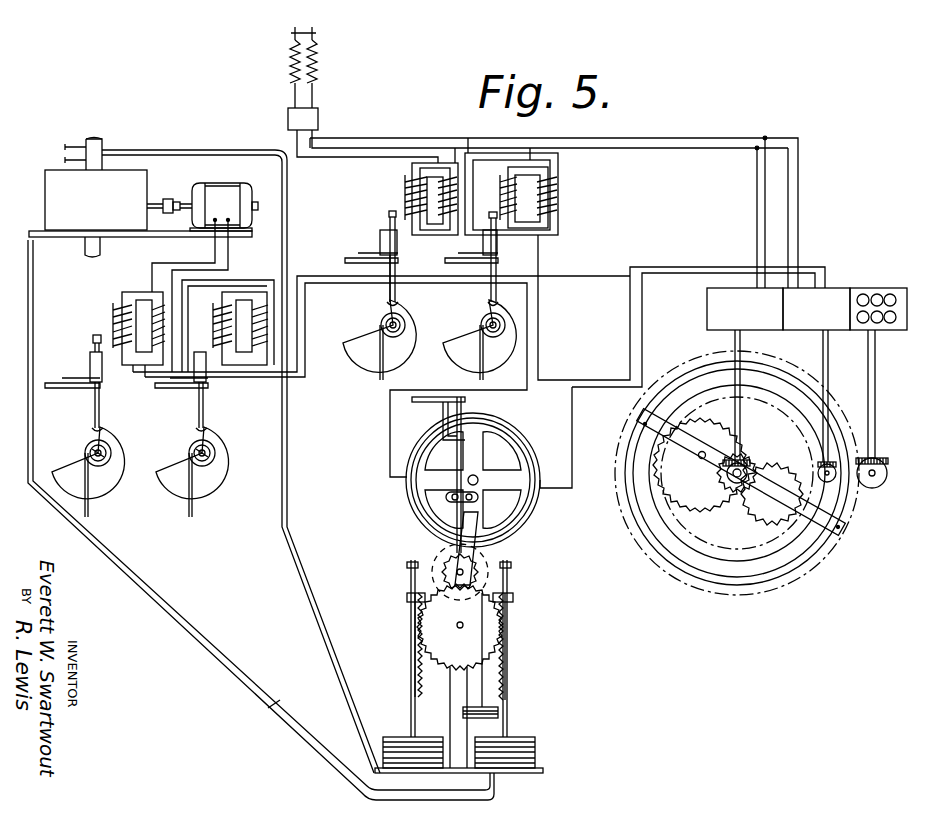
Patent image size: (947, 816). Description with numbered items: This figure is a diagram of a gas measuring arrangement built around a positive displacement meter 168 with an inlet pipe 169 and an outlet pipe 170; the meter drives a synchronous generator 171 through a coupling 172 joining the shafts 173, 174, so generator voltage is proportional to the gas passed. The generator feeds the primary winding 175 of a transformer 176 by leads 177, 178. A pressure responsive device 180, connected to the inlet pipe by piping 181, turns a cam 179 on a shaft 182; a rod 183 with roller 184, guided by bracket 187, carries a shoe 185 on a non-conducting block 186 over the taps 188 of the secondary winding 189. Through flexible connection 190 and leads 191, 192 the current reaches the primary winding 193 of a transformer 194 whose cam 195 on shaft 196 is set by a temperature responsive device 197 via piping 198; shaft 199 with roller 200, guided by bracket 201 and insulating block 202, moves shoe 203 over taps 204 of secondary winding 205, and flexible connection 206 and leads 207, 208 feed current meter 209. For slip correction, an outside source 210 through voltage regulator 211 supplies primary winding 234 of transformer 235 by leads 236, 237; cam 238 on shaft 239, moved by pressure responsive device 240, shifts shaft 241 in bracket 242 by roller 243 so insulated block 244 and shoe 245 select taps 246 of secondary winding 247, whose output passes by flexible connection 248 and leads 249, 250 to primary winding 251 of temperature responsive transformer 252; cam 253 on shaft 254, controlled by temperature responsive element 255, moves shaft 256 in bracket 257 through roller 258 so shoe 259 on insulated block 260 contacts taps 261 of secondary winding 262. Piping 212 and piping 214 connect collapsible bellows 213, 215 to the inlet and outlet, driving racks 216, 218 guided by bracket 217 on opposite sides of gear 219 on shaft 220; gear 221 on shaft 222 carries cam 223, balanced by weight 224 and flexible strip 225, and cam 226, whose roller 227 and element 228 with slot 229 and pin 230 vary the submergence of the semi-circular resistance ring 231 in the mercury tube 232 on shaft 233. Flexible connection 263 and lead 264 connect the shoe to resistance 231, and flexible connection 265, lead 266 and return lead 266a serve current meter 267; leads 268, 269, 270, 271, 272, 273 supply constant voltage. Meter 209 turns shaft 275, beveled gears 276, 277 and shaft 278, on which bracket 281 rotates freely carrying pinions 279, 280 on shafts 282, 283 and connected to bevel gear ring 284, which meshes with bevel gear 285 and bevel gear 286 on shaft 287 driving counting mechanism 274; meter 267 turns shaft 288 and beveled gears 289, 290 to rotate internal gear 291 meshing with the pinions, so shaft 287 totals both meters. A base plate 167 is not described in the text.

The base plate 167 is at (140, 234).
The positive displacement meter 168 is at (45, 190).
The inlet pipe 169 is at (97, 145).
The outlet pipe 170 is at (85, 252).
The synchronous generator 171 is at (240, 193).
The coupling 172 is at (170, 199).
The shaft 173 is at (155, 203).
The shaft 174 is at (220, 187).
The primary winding 175 is at (135, 310).
The transformer 176 is at (122, 292).
The lead 177 is at (215, 250).
The lead 178 is at (228, 253).
The cam 179 is at (72, 482).
The pressure responsive device 180 is at (106, 447).
The piping 181 is at (72, 145).
The shaft 182 is at (90, 451).
The rod 183 is at (92, 404).
The roller 184 is at (92, 428).
The shoe 185 is at (93, 338).
The non-conducting block 186 is at (95, 347).
The bracket 187 is at (90, 362).
The taps 188 is at (113, 326).
The secondary winding 189 is at (113, 311).
The flexible connection 190 is at (104, 362).
The lead 191 is at (133, 375).
The lead 192 is at (145, 380).
The primary winding 193 is at (65, 155).
The transformer 194 is at (238, 292).
The cam 195 is at (212, 492).
The shaft 196 is at (194, 451).
The temperature responsive device 197 is at (212, 446).
The piping 198 is at (189, 496).
The shaft 199 is at (199, 412).
The roller 200 is at (196, 428).
The bracket 201 is at (190, 384).
The insulating block 202 is at (213, 326).
The shoe 203 is at (213, 311).
The taps 204 is at (215, 308).
The secondary winding 205 is at (262, 292).
The flexible connection 206 is at (206, 365).
The lead 207 is at (297, 345).
The lead 208 is at (305, 360).
The current meter 209 is at (745, 309).
The outside source 210 is at (316, 34).
The voltage regulator 211 is at (318, 118).
The piping 212 is at (190, 150).
The collapsible bellows 213 is at (395, 735).
The piping 214 is at (288, 700).
The collapsible bellows 215 is at (528, 736).
The rack 216 is at (415, 642).
The bracket 217 is at (407, 565).
The rack 218 is at (506, 650).
The gear 219 is at (492, 627).
The shaft 220 is at (459, 628).
The gear 221 is at (407, 586).
The shaft 222 is at (458, 576).
The cam 223 is at (456, 558).
The weight 224 is at (463, 709).
The flexible strip 225 is at (485, 700).
The cam 226 is at (436, 562).
The roller 227 is at (458, 560).
The element 228 is at (458, 478).
The slot 229 is at (447, 496).
The pin 230 is at (474, 503).
The semi-circular resistance ring 231 is at (490, 420).
The tube 232 is at (530, 432).
The shaft 233 is at (478, 480).
The primary winding 234 is at (455, 165).
The transformer 235 is at (423, 165).
The lead 236 is at (365, 148).
The lead 237 is at (330, 155).
The cam 238 is at (355, 370).
The shaft 239 is at (403, 318).
The pressure responsive device 240 is at (386, 325).
The shaft 241 is at (389, 300).
The bracket 242 is at (380, 246).
The roller 243 is at (387, 306).
The insulated block 244 is at (389, 226).
The shoe 245 is at (404, 214).
The taps 246 is at (405, 195).
The secondary winding 247 is at (410, 182).
The flexible connection 248 is at (380, 233).
The lead 249 is at (483, 160).
The lead 250 is at (510, 160).
The primary winding 251 is at (558, 198).
The temperature responsive transformer 252 is at (545, 167).
The cam 253 is at (470, 340).
The shaft 254 is at (481, 322).
The temperature responsive element 255 is at (493, 355).
The shaft 256 is at (490, 300).
The bracket 257 is at (478, 252).
The roller 258 is at (494, 310).
The shoe 259 is at (490, 211).
The insulated block 260 is at (478, 234).
The taps 261 is at (500, 197).
The secondary winding 262 is at (510, 190).
The flexible connection 263 is at (497, 247).
The lead 264 is at (540, 262).
The flexible connection 265 is at (555, 487).
The lead 266 is at (576, 433).
The return lead 266a is at (556, 376).
The current meter 267 is at (816, 309).
The lead 268 is at (715, 138).
The lead 269 is at (722, 150).
The lead 270 is at (757, 205).
The lead 271 is at (765, 221).
The lead 272 is at (790, 182).
The lead 273 is at (799, 190).
The counting mechanism 274 is at (860, 292).
The shaft 275 is at (741, 350).
The beveled gear 276 is at (742, 458).
The beveled gear 277 is at (752, 470).
The shaft 278 is at (733, 483).
The pinion 279 is at (712, 512).
The pinion 280 is at (704, 438).
The bracket 281 is at (812, 535).
The shaft 282 is at (768, 500).
The shaft 283 is at (703, 460).
The bevel gear ring 284 is at (772, 580).
The bevel gear 285 is at (880, 488).
The bevel gear 286 is at (880, 460).
The shaft 287 is at (876, 365).
The shaft 288 is at (822, 340).
The beveled gear 289 is at (830, 445).
The beveled gear 290 is at (836, 480).
The bevel gear 291 is at (705, 540).